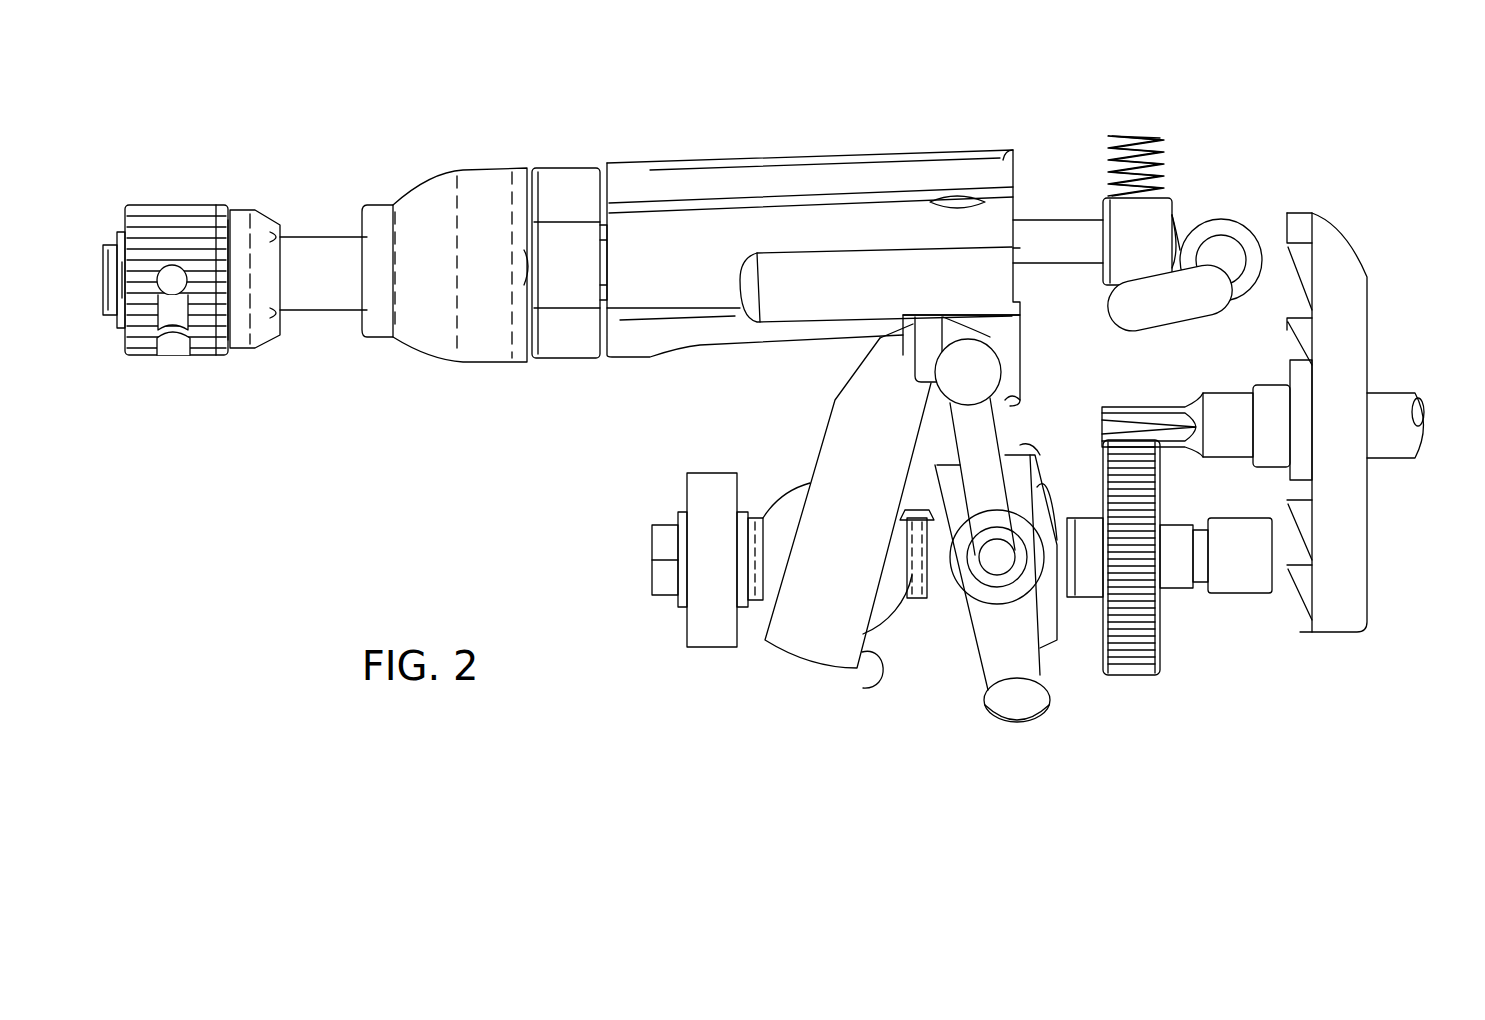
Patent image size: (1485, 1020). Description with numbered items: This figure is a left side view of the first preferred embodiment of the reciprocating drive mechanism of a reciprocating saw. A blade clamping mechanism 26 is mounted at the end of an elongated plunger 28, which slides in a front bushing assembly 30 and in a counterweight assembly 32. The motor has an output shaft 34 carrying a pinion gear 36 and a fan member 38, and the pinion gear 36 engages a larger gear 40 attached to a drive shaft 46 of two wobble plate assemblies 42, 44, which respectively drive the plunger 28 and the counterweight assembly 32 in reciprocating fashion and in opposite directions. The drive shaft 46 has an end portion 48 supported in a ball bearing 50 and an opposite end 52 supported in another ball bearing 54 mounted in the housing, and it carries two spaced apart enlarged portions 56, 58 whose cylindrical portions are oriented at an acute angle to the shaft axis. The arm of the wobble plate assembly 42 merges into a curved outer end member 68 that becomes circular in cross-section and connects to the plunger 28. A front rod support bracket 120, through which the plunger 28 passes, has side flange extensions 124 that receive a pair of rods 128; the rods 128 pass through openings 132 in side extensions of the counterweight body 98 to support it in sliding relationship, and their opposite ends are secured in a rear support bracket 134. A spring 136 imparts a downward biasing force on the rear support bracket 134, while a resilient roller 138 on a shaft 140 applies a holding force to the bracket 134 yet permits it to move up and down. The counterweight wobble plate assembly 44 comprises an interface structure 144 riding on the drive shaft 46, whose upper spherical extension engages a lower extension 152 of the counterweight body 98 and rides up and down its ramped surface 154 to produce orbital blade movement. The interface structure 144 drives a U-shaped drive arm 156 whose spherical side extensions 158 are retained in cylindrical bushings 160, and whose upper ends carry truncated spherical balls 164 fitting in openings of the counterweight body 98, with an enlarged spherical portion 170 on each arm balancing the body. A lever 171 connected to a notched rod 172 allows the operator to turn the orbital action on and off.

The blade clamping mechanism 26 is at (162, 206).
The plunger 28 is at (322, 290).
The front bushing assembly 30 is at (434, 168).
The counterweight assembly 32 is at (813, 232).
The output shaft 34 is at (1395, 405).
The pinion gear 36 is at (1238, 393).
The fan member 38 is at (1338, 250).
The gear 40 is at (1128, 650).
The wobble plate assembly 42 is at (787, 682).
The counterweight wobble plate assembly 44 is at (945, 655).
The drive shaft 46 is at (1085, 600).
The end portion 48 is at (1200, 595).
The ball bearing 50 is at (1250, 597).
The opposite end 52 is at (756, 602).
The ball bearing 54 is at (710, 632).
The enlarged portion 56 is at (800, 500).
The enlarged portion 58 is at (1037, 487).
The curved outer end member 68 is at (878, 682).
The counterweight body 98 is at (720, 180).
The front rod support bracket 120 is at (566, 198).
The side flange extensions 124 is at (566, 292).
The rods 128 is at (1053, 240).
The openings 132 is at (679, 282).
The rear support bracket 134 is at (1132, 253).
The spring 136 is at (1143, 138).
The roller 138 is at (1245, 244).
The shaft 140 is at (1212, 256).
The interface structure 144 is at (968, 652).
The lower extension 152 is at (1010, 350).
The ramped surface 154 is at (1020, 398).
The U-shaped drive arm 156 is at (1022, 692).
The spherical side extensions 158 is at (990, 560).
The cylindrical bushings 160 is at (965, 573).
The truncated spherical balls 164 is at (957, 318).
The enlarged spherical portion 170 is at (977, 367).
The lever 171 is at (1172, 305).
The rod 172 is at (792, 298).